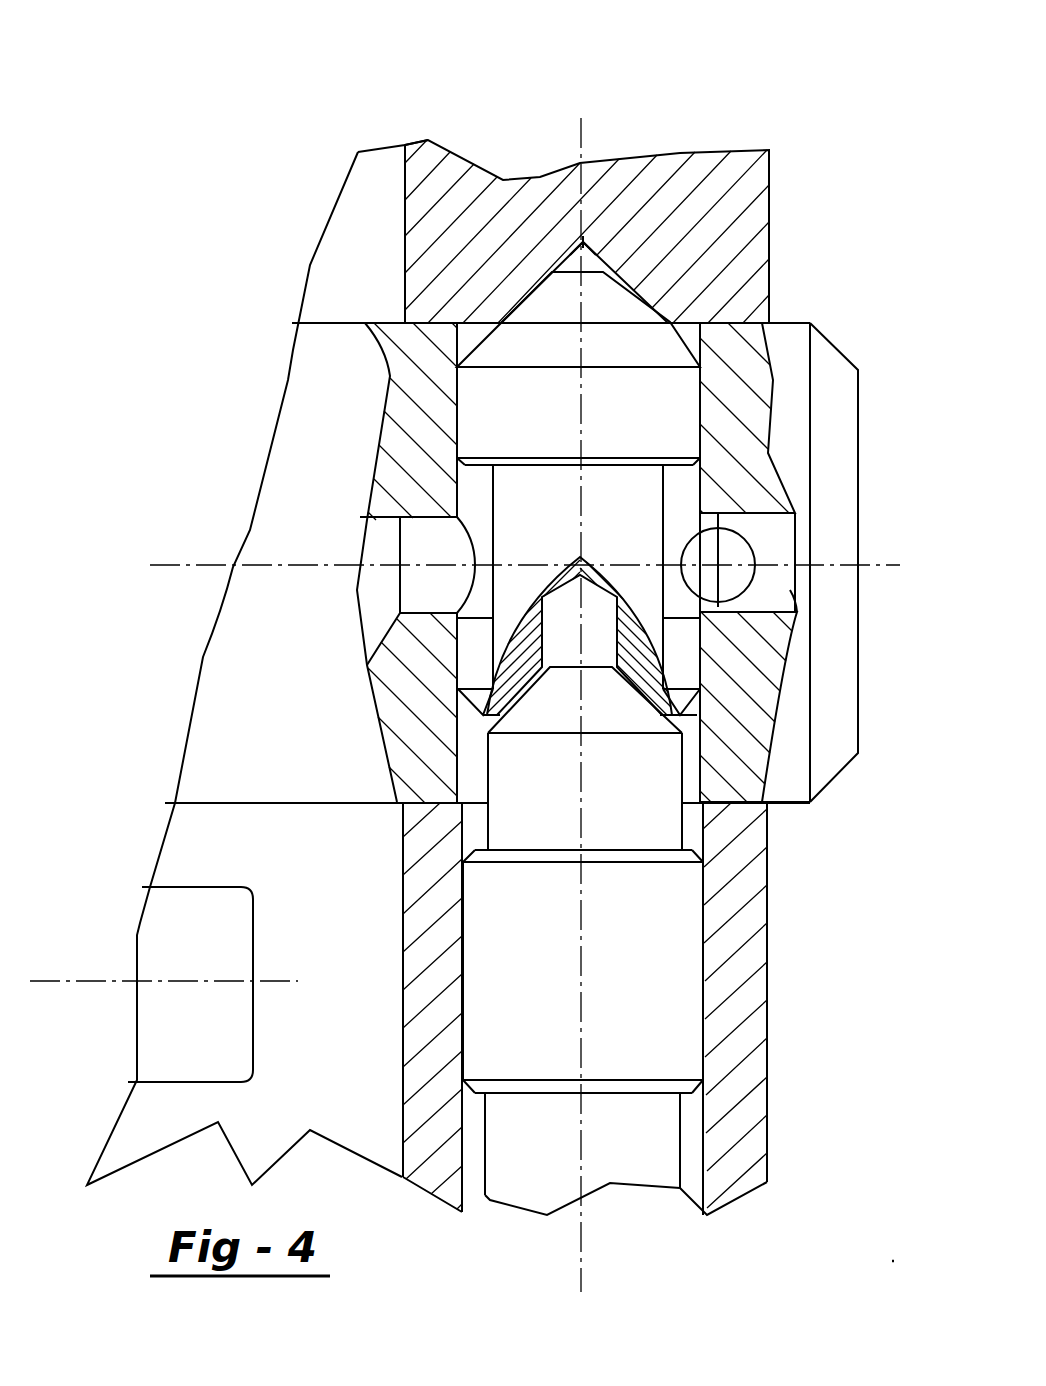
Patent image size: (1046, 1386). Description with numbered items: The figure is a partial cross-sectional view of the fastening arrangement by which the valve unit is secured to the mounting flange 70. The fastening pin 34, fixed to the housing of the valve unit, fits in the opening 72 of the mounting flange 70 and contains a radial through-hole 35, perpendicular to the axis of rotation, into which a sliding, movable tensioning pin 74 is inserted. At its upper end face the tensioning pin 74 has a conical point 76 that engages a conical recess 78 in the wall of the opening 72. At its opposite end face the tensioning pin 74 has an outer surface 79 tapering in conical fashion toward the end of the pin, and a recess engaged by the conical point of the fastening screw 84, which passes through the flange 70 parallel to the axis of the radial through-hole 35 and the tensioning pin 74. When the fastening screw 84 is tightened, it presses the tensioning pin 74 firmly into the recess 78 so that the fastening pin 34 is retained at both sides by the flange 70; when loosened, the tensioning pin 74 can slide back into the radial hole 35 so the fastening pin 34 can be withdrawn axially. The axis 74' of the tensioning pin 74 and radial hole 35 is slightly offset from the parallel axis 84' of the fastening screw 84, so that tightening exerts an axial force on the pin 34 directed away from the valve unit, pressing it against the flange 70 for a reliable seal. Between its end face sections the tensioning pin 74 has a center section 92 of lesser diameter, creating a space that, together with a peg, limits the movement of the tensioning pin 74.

The mounting flange 70 is at (683, 205).
The conical point 76 is at (537, 330).
The conical recess 78 is at (580, 245).
The tensioning pin 74 is at (451, 563).
The axis of the tensioning pin 74' is at (451, 383).
The radial through-hole 35 is at (473, 488).
The center section 92 is at (518, 530).
The outer surface tapering in conical fashion 79 is at (482, 715).
The fastening pin 34 is at (798, 347).
The opening 72 is at (737, 805).
The axis of the fastening screw 84' is at (670, 812).
The fastening screw 84 is at (652, 1032).